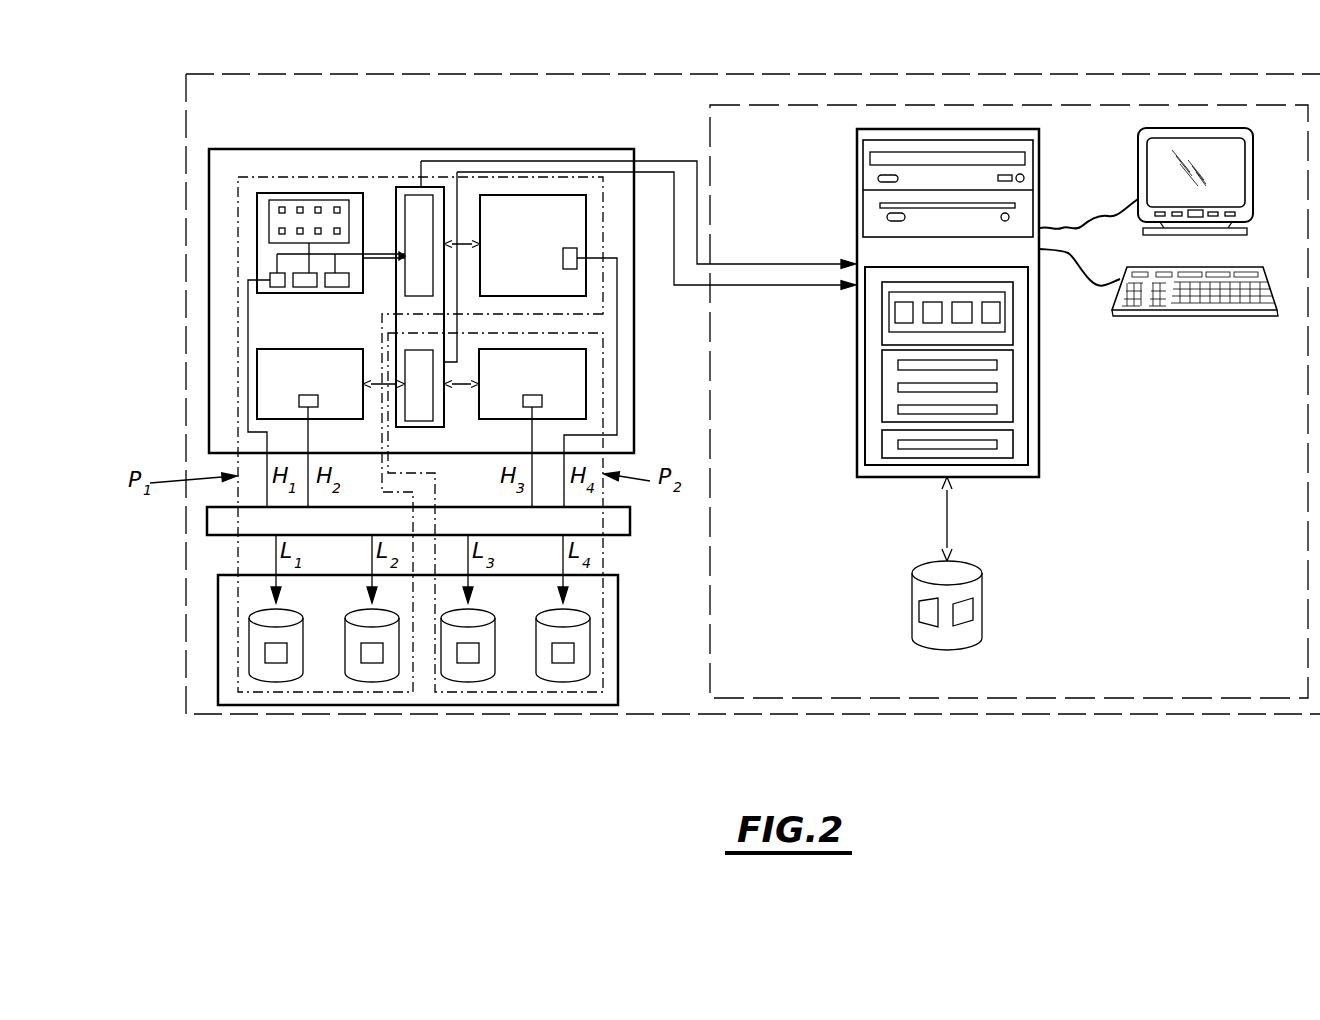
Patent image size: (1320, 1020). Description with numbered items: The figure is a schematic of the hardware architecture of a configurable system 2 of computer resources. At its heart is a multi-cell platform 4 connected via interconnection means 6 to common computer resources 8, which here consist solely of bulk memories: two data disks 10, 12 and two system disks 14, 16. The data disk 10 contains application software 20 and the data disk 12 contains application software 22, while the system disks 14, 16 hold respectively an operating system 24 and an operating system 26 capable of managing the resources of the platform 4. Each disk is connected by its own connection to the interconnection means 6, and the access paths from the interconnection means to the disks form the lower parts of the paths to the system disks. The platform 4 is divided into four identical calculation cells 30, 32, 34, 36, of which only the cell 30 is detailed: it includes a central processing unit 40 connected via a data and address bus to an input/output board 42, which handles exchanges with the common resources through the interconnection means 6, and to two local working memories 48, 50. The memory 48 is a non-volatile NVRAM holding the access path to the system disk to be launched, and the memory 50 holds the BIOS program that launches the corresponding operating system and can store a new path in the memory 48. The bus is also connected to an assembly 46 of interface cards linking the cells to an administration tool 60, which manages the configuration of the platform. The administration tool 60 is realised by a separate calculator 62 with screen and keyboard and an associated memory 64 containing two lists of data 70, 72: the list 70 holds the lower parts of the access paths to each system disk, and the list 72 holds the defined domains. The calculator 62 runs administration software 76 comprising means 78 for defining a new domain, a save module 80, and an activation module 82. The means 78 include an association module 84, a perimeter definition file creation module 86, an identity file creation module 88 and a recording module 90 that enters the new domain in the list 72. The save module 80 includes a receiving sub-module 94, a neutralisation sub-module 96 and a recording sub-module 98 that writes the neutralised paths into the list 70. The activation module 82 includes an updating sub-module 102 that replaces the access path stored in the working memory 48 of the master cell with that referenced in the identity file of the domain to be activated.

The configurable system 2 is at (176, 651).
The multi-cell platform 4 is at (367, 147).
The interconnection means 6 is at (452, 562).
The common computer resources 8 is at (621, 611).
The data disk 10 is at (275, 681).
The data disk 12 is at (468, 688).
The system disk 14 is at (369, 683).
The system disk 16 is at (563, 686).
The application software 20 is at (268, 660).
The application software 22 is at (474, 661).
The operating system 24 is at (375, 661).
The operating system 26 is at (575, 655).
The calculation cell 30 is at (256, 232).
The calculation cell 32 is at (310, 428).
The calculation cell 34 is at (532, 428).
The calculation cell 36 is at (548, 351).
The central processing unit 40 is at (286, 192).
The input/output board 42 is at (270, 273).
The assembly of interface cards 46 is at (400, 176).
The non-volatile NVRAM memory 48 is at (306, 288).
The BIOS memory 50 is at (345, 288).
The administration tool 60 is at (1210, 699).
The separate calculator 62 is at (856, 168).
The memory 64 is at (982, 593).
The list of access paths 70 is at (963, 612).
The list of domains 72 is at (922, 613).
The administration software 76 is at (1031, 422).
The means for definition of a new domain 78 is at (881, 322).
The save module 80 is at (881, 380).
The activation module 82 is at (880, 445).
The association module 84 is at (930, 302).
The perimeter definition file creation module 86 is at (900, 302).
The identity file creation module 88 is at (958, 302).
The recording module 90 is at (990, 302).
The receiving sub-module 94 is at (990, 367).
The neutralisation sub-module 96 is at (990, 388).
The recording sub-module 98 is at (990, 411).
The access path updating sub-module 102 is at (990, 446).